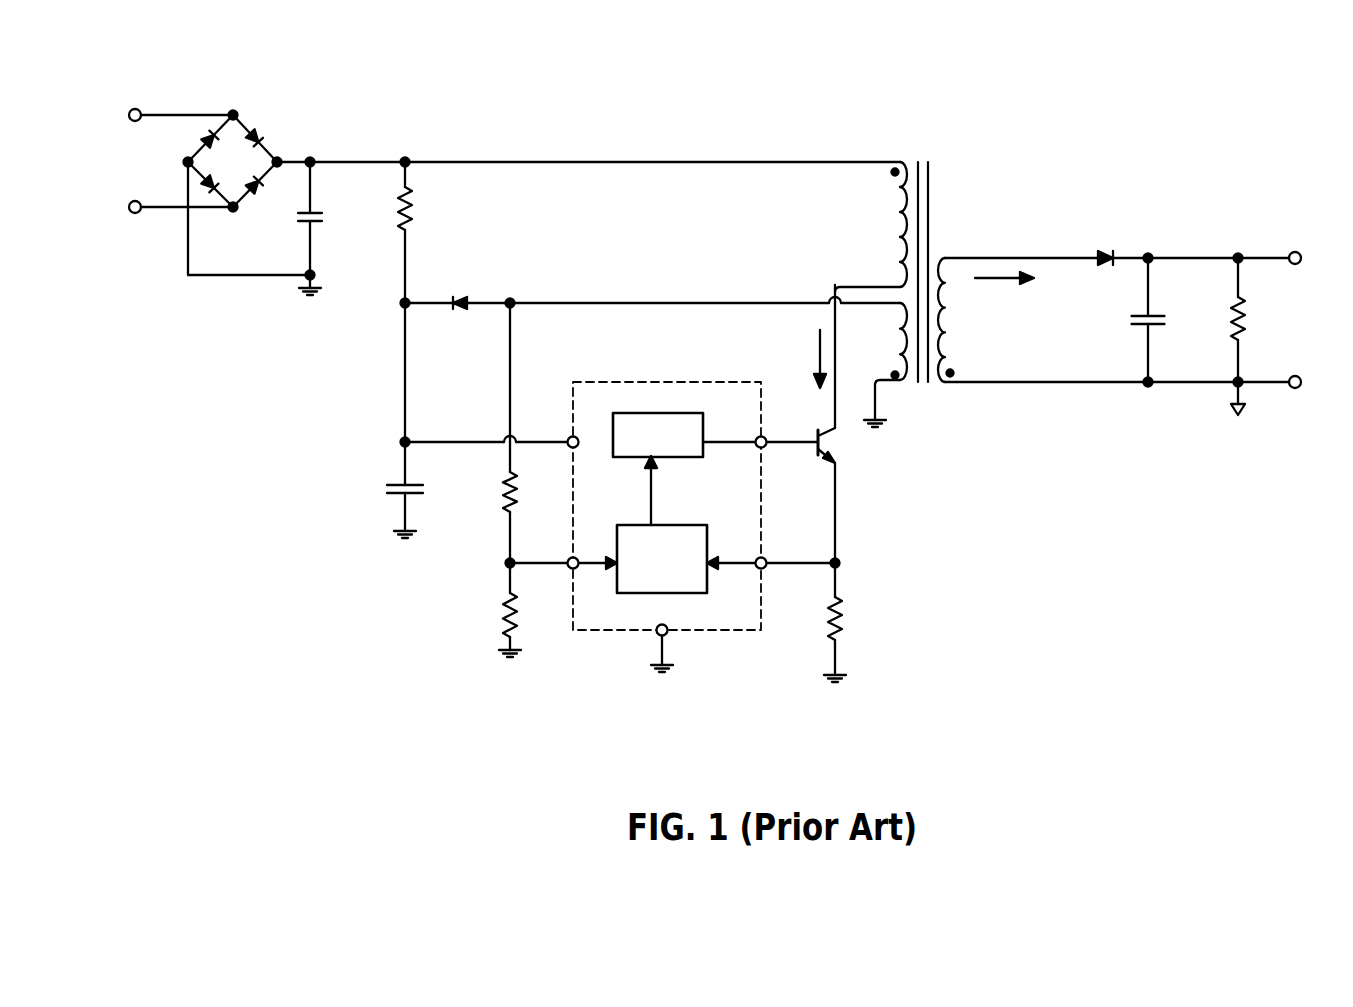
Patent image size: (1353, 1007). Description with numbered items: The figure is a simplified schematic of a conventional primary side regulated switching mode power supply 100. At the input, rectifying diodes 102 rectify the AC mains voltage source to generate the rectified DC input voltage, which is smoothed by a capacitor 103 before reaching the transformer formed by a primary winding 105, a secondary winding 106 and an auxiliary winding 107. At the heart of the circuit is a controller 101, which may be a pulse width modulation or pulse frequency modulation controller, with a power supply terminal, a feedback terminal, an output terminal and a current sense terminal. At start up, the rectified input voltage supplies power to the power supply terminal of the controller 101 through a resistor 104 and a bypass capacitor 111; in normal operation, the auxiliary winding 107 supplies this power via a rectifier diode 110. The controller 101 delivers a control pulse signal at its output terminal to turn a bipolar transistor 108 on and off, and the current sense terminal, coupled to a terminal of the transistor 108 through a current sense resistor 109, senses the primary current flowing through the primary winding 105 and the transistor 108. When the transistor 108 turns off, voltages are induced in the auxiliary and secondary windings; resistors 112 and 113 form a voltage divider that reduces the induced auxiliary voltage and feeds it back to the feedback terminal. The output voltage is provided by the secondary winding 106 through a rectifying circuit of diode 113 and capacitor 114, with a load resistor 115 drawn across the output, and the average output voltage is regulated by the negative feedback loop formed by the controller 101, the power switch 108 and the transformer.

The switching mode power supply 100 is at (731, 375).
The controller 101 is at (603, 641).
The rectifying diodes 102 is at (268, 122).
The input capacitor 103 is at (293, 223).
The resistor 104 is at (422, 200).
The primary winding 105 is at (892, 190).
The secondary winding 106 is at (955, 305).
The auxiliary winding 107 is at (892, 337).
The bipolar transistor 108 is at (848, 453).
The current sense resistor 109 is at (850, 610).
The rectifier diode 110 is at (470, 285).
The bypass capacitor 111 is at (373, 497).
The resistor 112 is at (490, 505).
The resistor / diode 113 is at (490, 615).
The capacitor 114 is at (1164, 337).
The load resistor 115 is at (1258, 327).